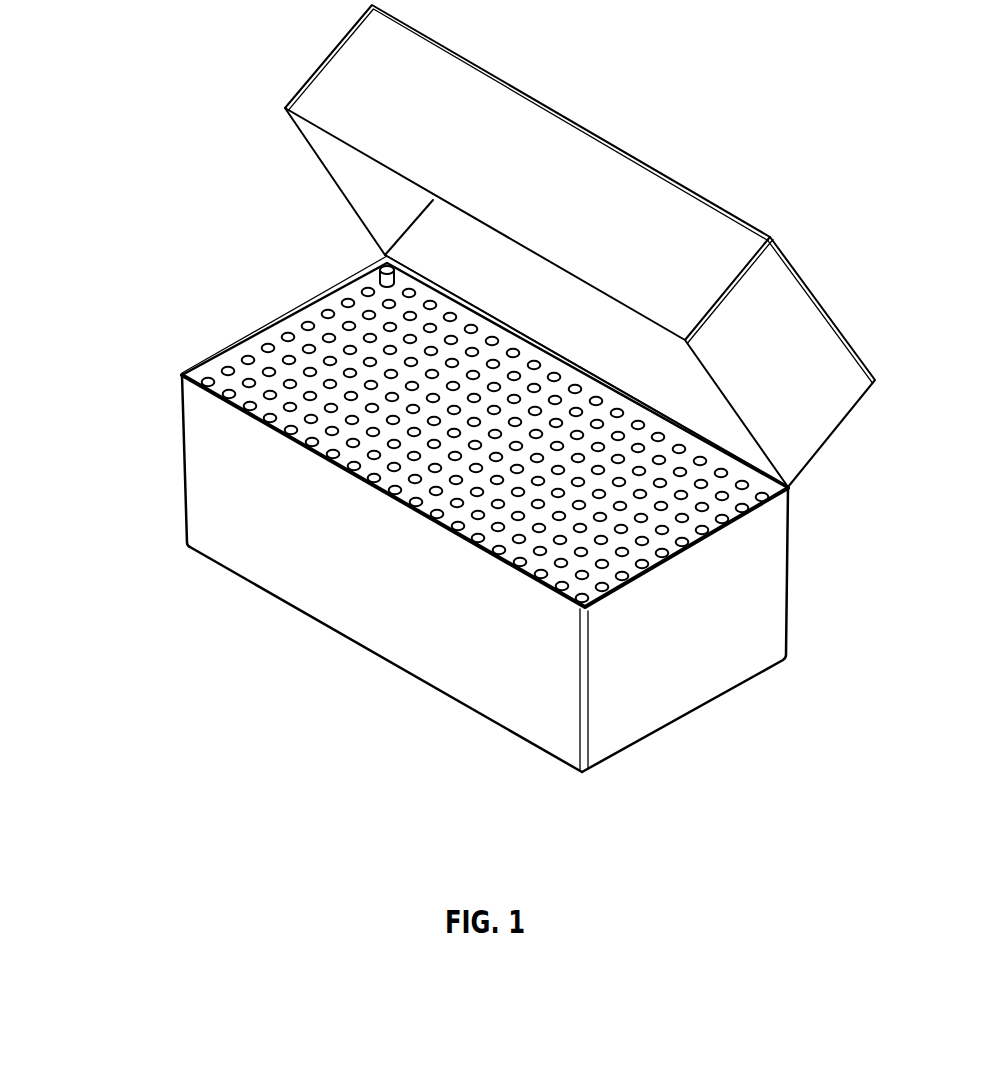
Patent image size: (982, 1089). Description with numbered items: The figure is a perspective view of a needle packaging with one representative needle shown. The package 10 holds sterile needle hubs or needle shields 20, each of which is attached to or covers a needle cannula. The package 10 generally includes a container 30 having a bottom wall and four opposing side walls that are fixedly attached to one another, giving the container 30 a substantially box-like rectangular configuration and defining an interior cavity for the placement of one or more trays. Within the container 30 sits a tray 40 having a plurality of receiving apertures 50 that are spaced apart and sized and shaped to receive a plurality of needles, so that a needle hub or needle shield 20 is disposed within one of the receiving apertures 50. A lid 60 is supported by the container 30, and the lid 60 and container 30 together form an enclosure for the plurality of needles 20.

The package 10 is at (118, 50).
The needle shield 20 is at (386, 258).
The container 30 is at (174, 457).
The tray 40 is at (273, 333).
The receiving apertures 50 is at (266, 395).
The lid 60 is at (320, 74).